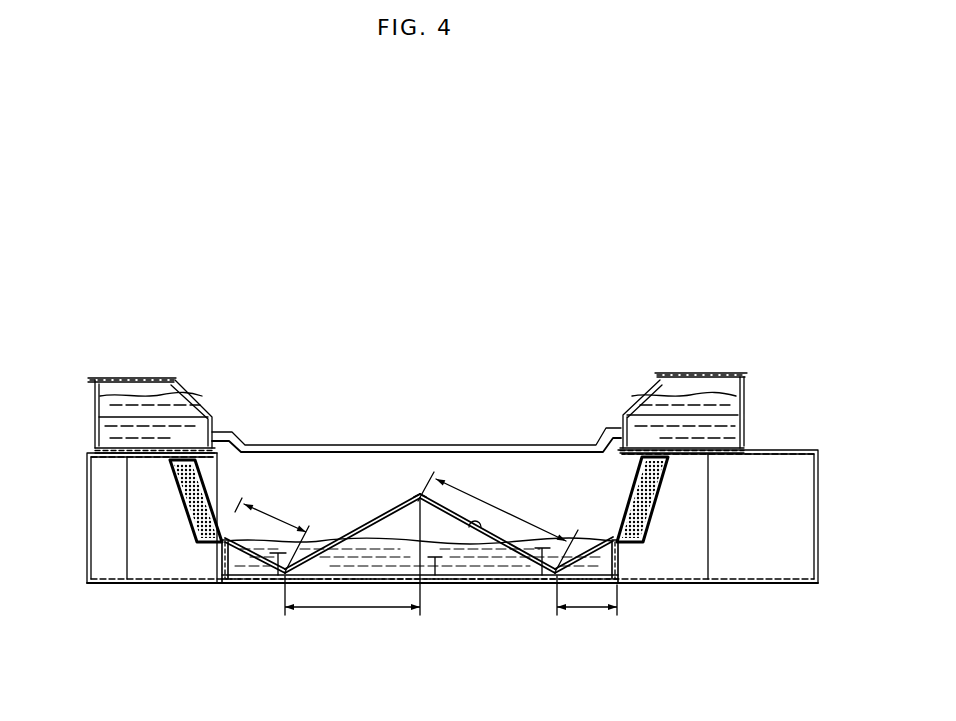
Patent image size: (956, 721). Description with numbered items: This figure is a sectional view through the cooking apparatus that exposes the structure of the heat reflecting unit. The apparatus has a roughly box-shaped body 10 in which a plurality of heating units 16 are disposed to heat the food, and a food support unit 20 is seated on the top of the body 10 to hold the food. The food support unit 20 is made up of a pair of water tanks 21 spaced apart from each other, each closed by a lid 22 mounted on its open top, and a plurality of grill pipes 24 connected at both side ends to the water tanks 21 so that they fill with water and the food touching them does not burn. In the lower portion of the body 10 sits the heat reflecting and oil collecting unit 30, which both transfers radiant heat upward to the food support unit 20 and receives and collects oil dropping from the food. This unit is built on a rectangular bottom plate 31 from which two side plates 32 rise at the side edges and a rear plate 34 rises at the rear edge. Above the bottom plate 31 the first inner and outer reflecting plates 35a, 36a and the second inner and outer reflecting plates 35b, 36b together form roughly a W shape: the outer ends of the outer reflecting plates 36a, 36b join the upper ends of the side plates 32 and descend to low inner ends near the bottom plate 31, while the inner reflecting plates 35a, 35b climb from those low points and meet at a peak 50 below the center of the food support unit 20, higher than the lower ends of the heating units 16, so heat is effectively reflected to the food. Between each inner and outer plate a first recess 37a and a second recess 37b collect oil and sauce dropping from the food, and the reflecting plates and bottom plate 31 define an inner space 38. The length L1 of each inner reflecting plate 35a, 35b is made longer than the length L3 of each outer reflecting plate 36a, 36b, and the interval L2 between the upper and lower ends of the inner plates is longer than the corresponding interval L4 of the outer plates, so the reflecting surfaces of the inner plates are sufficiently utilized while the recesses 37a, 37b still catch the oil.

The body 10 is at (781, 442).
The heating units 16 is at (185, 494).
The food support unit 20 is at (687, 362).
The water tanks 21 is at (125, 389).
The lid 22 is at (137, 377).
The grill pipes 24 is at (279, 446).
The heat reflecting and oil collecting unit 30 is at (405, 547).
The bottom plate 31 is at (519, 583).
The side plates 32 is at (227, 585).
The rear plate 34 is at (411, 540).
The first inner reflecting plate 35a is at (372, 523).
The second inner reflecting plate 35b is at (479, 531).
The first outer reflecting plate 36a is at (242, 544).
The second outer reflecting plate 36b is at (593, 544).
The first recess 37a is at (277, 556).
The second recess 37b is at (543, 552).
The inner space 38 is at (435, 560).
The peak 50 is at (420, 496).
The length of inner reflecting plate L1 is at (498, 522).
The interval of inner reflecting plate L2 is at (352, 565).
The length of outer reflecting plate L3 is at (272, 530).
The interval of outer reflecting plate L4 is at (587, 603).